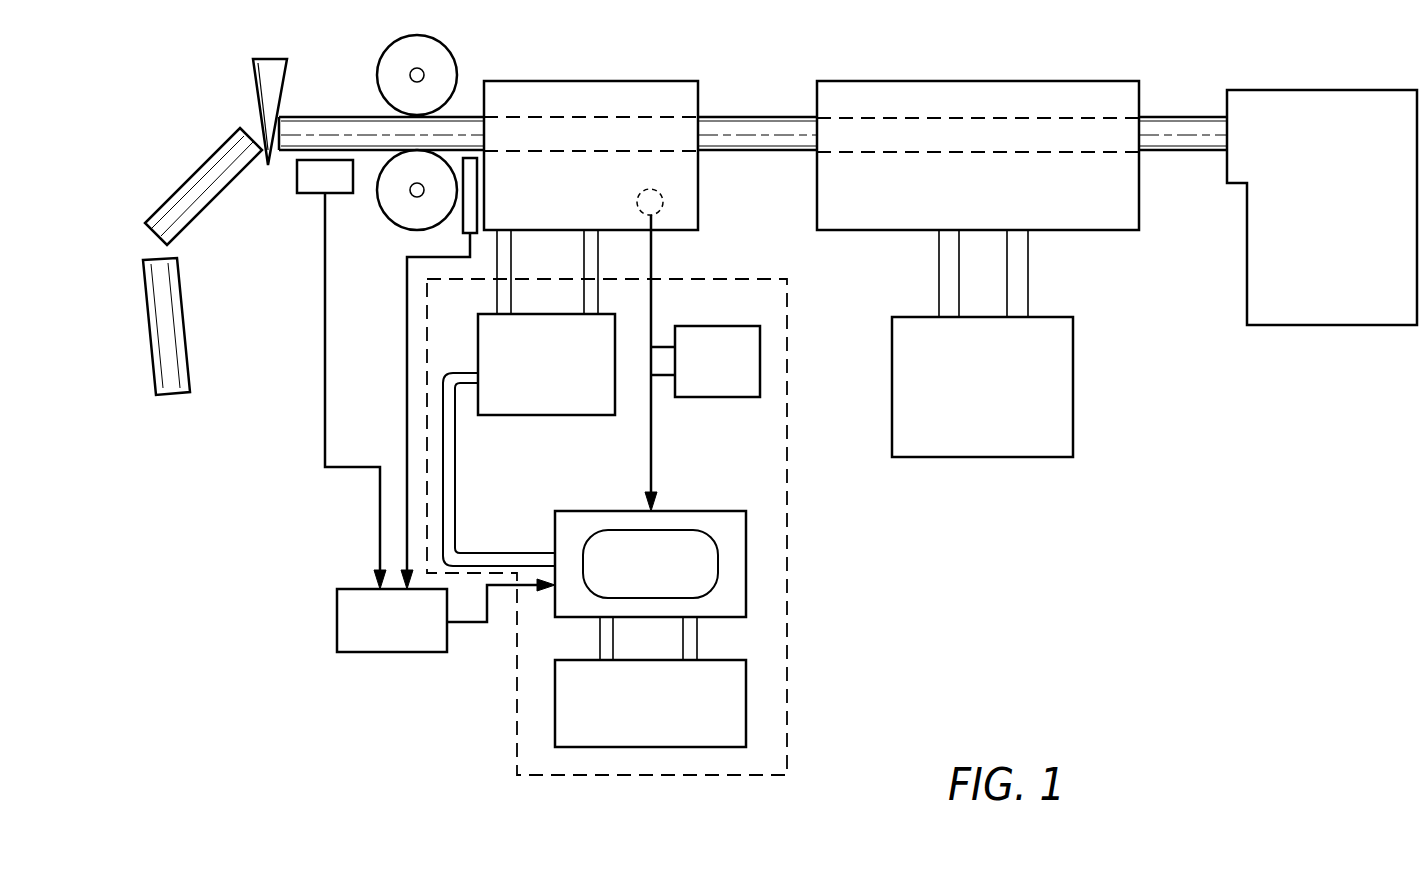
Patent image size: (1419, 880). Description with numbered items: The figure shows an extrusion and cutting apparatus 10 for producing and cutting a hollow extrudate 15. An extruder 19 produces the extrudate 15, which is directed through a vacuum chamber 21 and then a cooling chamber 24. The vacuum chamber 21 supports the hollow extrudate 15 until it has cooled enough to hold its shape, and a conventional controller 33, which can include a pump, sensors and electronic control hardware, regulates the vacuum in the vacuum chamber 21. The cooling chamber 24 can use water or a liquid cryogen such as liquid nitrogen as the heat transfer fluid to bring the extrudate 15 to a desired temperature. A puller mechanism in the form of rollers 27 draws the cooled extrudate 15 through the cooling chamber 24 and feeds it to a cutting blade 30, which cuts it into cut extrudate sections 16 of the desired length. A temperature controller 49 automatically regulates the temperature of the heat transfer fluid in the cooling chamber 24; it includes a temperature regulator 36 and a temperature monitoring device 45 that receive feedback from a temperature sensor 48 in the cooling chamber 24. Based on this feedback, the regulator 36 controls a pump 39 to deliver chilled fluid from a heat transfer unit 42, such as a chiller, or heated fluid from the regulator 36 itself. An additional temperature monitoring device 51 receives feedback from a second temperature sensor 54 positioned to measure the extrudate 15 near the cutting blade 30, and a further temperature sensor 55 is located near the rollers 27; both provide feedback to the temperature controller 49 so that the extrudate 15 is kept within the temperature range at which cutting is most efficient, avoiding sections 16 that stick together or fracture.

The apparatus 10 is at (881, 61).
The extrudate 15 is at (1182, 118).
The cut extrudate sections 16 is at (190, 215).
The extruder 19 is at (1322, 312).
The vacuum chamber 21 is at (1098, 218).
The cooling chamber 24 is at (628, 92).
The rollers 27 is at (441, 58).
The cutting blade 30 is at (268, 81).
The controller 33 is at (1033, 444).
The temperature regulator 36 is at (698, 511).
The pump 39 is at (537, 407).
The heat transfer unit 42 is at (717, 660).
The temperature monitoring device 45 is at (704, 398).
The temperature sensor 48 is at (663, 202).
The temperature controller 49 is at (713, 775).
The temperature monitoring device 51 is at (387, 652).
The temperature sensor 54 is at (311, 185).
The temperature sensor 55 is at (477, 180).